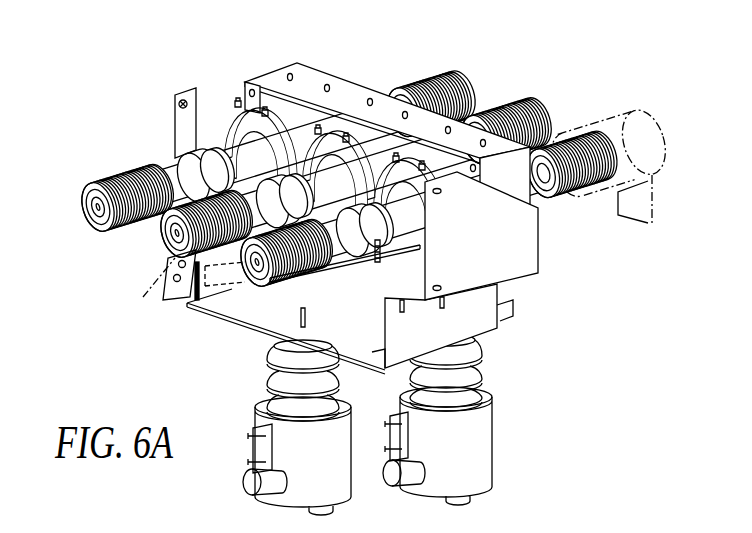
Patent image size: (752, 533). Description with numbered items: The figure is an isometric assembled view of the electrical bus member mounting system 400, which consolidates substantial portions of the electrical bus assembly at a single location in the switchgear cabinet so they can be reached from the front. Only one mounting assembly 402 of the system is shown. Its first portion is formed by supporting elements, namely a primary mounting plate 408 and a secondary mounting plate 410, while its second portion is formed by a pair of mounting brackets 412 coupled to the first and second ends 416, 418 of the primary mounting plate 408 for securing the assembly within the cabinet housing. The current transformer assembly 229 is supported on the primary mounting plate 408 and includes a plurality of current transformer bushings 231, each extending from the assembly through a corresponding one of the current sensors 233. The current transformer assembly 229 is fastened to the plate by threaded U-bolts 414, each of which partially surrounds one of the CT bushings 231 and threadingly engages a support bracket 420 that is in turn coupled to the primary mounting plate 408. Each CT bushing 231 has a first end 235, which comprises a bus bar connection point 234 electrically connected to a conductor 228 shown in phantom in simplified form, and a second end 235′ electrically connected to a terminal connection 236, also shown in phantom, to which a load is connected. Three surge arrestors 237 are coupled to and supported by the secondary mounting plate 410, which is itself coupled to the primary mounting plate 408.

The conductor 228 is at (618, 98).
The current transformer assembly 229 is at (213, 46).
The current transformer (CT) bushing 231 is at (386, 166).
The current sensor 233 is at (398, 156).
The bus bar connection point 234 is at (593, 115).
The first end 235 is at (545, 138).
The second end 235′ is at (238, 287).
The terminal connection 236 is at (141, 303).
The surge arrestor 237 is at (480, 362).
The electrical bus member mounting system 400 is at (556, 460).
The mounting assembly 402 is at (535, 329).
The primary mounting plate 408 is at (383, 287).
The secondary mounting plate 410 is at (310, 334).
The mounting bracket 412 is at (185, 125).
The threaded U-bolt 414 is at (298, 196).
The first end 416 is at (416, 318).
The second end 418 is at (153, 239).
The support bracket 420 is at (365, 268).